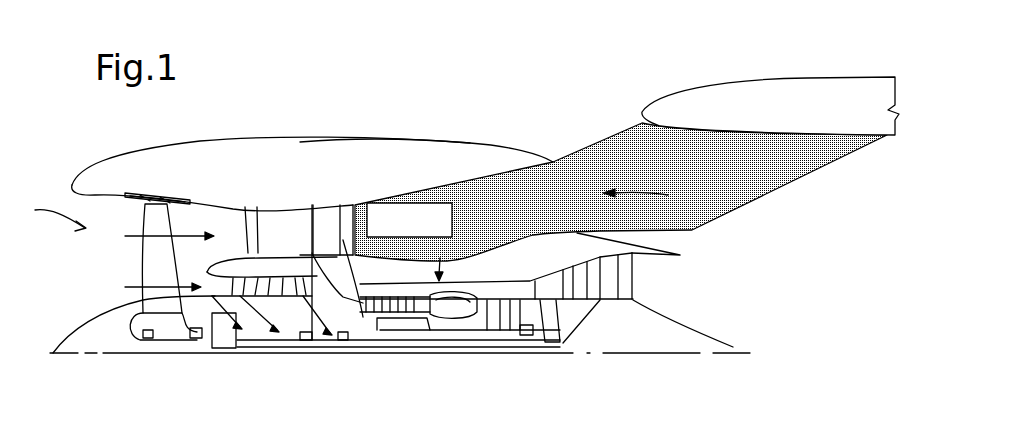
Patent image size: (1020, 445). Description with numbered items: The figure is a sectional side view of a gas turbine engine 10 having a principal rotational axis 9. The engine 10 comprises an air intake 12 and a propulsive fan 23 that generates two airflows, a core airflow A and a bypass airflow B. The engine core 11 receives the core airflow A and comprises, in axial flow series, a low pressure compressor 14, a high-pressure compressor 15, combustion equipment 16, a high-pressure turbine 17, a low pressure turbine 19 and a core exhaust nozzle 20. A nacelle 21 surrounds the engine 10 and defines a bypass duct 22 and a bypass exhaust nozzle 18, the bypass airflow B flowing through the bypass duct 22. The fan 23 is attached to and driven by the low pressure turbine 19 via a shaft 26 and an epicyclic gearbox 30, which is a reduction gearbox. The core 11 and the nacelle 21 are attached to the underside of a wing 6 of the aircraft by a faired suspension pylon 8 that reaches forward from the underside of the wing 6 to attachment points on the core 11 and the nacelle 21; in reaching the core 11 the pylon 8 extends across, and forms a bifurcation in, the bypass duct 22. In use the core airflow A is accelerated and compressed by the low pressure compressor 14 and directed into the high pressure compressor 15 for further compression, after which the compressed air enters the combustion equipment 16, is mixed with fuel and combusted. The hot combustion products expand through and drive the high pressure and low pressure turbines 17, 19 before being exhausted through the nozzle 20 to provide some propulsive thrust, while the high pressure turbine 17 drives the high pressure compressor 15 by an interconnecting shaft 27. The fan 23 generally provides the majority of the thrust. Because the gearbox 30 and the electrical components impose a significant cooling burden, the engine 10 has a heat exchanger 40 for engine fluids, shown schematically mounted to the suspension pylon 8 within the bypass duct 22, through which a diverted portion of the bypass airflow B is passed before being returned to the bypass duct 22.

The wing 6 is at (765, 92).
The suspension pylon 8 is at (586, 150).
The principal rotational axis 9 is at (605, 354).
The gas turbine engine 10 is at (124, 155).
The core 11 is at (444, 258).
The air intake 12 is at (49, 218).
The low pressure compressor 14 is at (277, 276).
The high-pressure compressor 15 is at (388, 297).
The combustion equipment 16 is at (461, 305).
The high-pressure turbine 17 is at (500, 290).
The bypass exhaust nozzle 18 is at (649, 195).
The low pressure turbine 19 is at (610, 268).
The core exhaust nozzle 20 is at (665, 283).
The nacelle 21 is at (332, 158).
The bypass duct 22 is at (307, 247).
The propulsive fan 23 is at (145, 258).
The shaft 26 is at (385, 343).
The interconnecting shaft 27 is at (420, 335).
The epicyclic gearbox 30 is at (225, 330).
The heat exchanger 40 is at (425, 203).
The core airflow A is at (154, 288).
The bypass airflow B is at (162, 236).